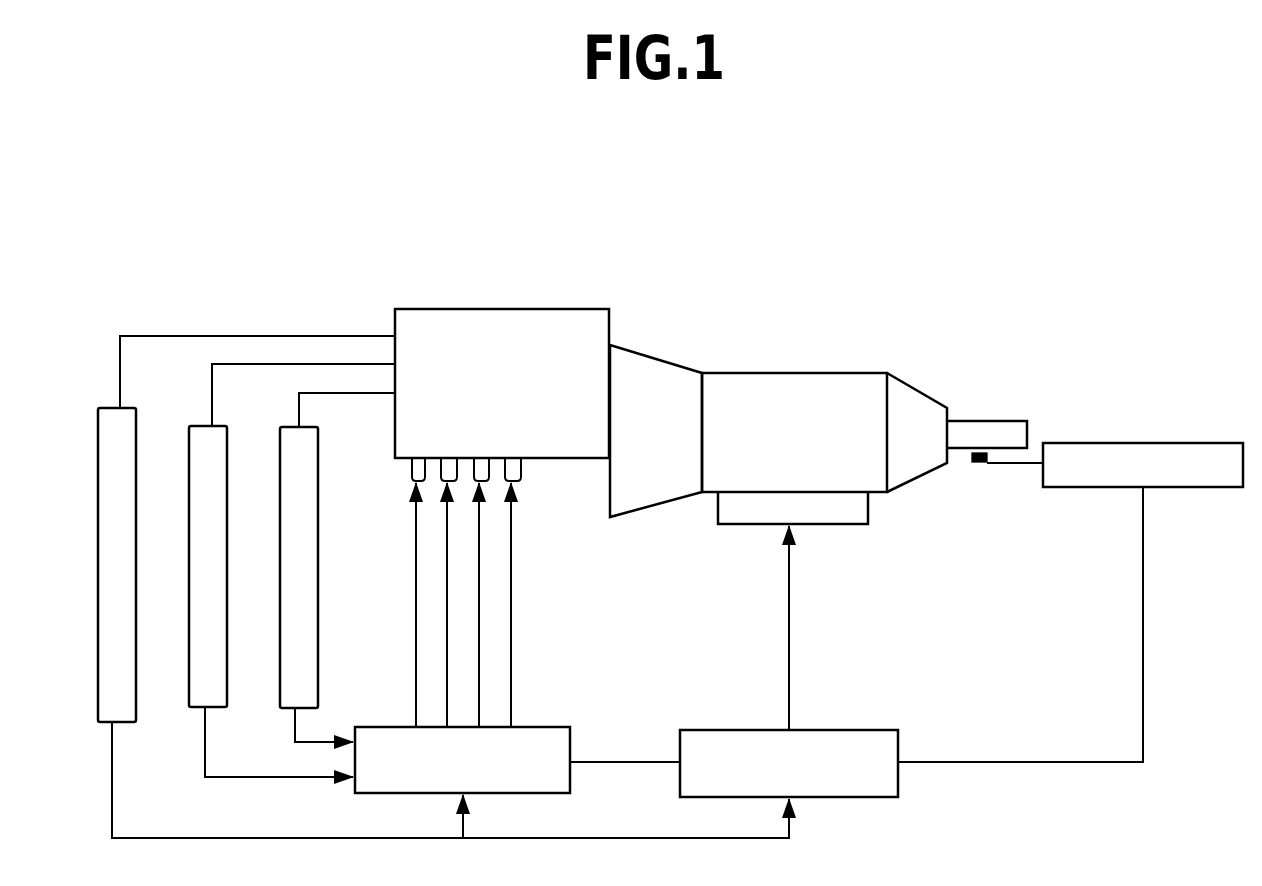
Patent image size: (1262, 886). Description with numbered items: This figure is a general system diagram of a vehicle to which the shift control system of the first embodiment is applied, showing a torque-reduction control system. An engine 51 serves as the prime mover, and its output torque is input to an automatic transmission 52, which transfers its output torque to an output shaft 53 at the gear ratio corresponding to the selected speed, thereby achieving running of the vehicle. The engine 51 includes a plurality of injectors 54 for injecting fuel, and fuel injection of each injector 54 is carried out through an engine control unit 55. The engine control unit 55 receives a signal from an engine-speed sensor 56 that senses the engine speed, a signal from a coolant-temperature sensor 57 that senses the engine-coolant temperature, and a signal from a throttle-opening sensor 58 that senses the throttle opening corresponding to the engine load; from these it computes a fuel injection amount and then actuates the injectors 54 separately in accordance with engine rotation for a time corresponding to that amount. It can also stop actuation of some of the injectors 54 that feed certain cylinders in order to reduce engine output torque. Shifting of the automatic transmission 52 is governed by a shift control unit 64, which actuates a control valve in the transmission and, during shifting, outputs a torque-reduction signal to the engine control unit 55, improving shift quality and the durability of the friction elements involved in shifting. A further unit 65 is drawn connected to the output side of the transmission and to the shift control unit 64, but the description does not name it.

The engine 51 is at (512, 309).
The automatic transmission 52 is at (796, 352).
The output shaft 53 is at (987, 421).
The injectors 54 is at (440, 470).
The engine control unit 55 is at (548, 727).
The engine-speed sensor 56 is at (290, 427).
The coolant-temperature sensor 57 is at (200, 426).
The throttle-opening sensor 58 is at (108, 408).
The shift control unit 64 is at (862, 730).
The exhaust gas sensor / analyzer 65 is at (1168, 443).